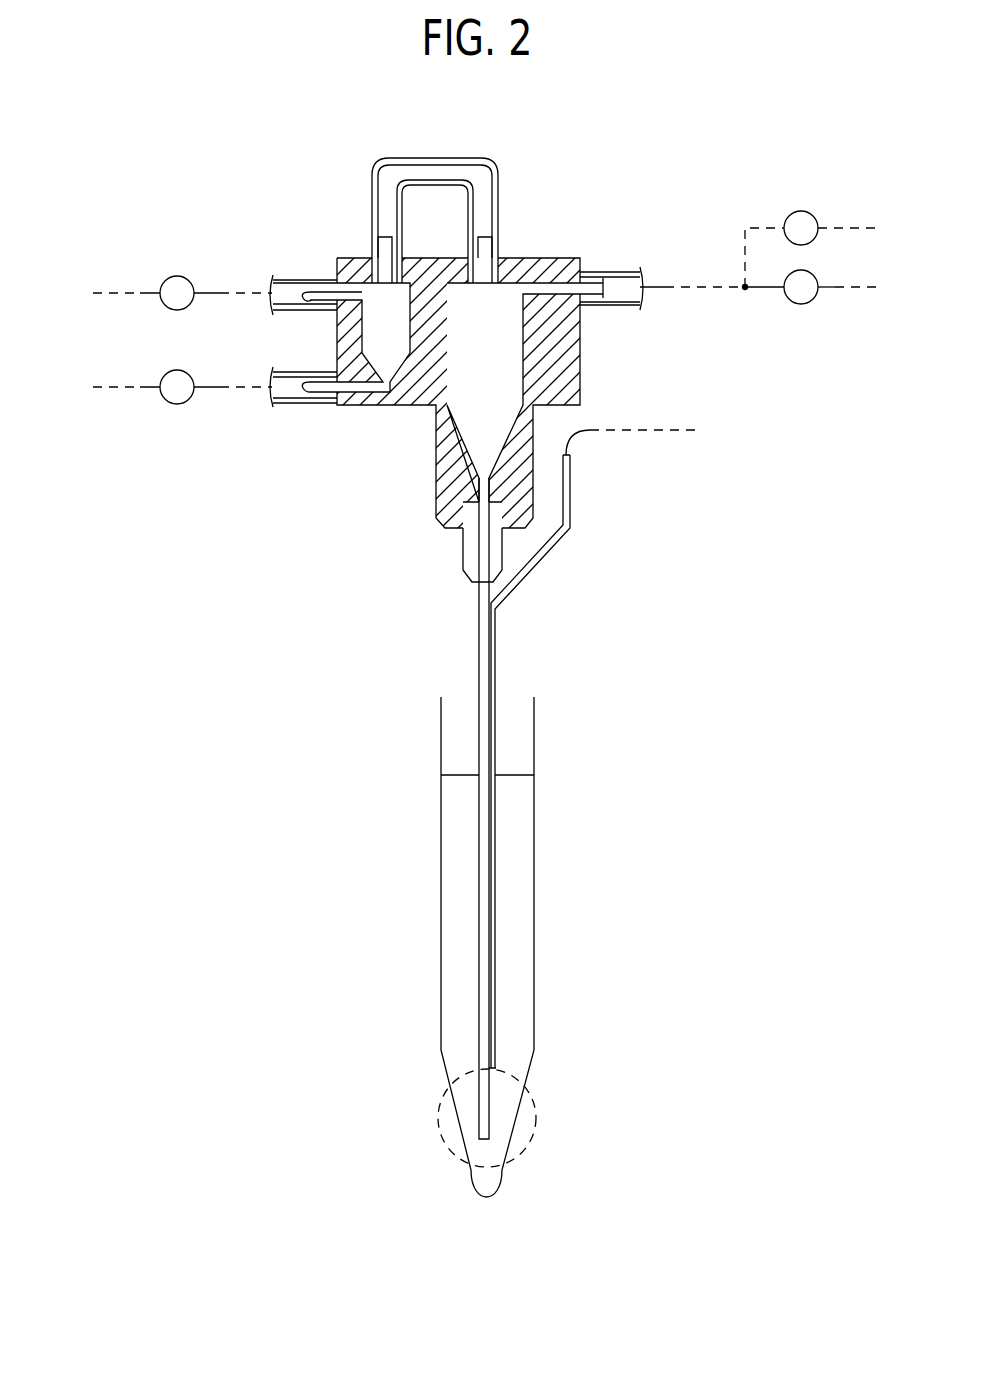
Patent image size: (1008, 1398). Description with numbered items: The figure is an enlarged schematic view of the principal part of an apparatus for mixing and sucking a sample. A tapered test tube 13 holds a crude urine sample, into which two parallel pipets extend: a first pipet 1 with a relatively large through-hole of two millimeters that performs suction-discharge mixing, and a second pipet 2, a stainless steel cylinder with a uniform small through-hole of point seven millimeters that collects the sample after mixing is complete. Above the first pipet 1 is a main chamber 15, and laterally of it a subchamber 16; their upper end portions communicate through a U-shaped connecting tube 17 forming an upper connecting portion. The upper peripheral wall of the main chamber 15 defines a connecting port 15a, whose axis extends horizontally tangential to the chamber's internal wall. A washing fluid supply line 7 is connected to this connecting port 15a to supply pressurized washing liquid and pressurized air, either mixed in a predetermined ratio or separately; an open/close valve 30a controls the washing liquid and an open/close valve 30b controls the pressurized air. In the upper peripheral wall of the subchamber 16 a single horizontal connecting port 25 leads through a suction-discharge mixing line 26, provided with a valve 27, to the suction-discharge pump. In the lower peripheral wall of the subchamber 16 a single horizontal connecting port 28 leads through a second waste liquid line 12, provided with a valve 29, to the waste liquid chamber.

The first pipet 1 is at (480, 876).
The second pipet 2 is at (493, 947).
The washing fluid supply line 7 is at (717, 285).
The second waste liquid line 12 is at (262, 388).
The tapered test tube 13 is at (535, 1030).
The main chamber 15 is at (512, 383).
The connecting port 15a is at (545, 285).
The subchamber 16 is at (385, 307).
The U-shaped connecting tube 17 is at (415, 157).
The connecting port 25 is at (308, 292).
The suction-discharge mixing line 26 is at (142, 294).
The valve 27 is at (177, 276).
The connecting port 28 is at (307, 398).
The valve 29 is at (177, 405).
The open/close valve 30a is at (800, 305).
The open/close valve 30b is at (801, 211).